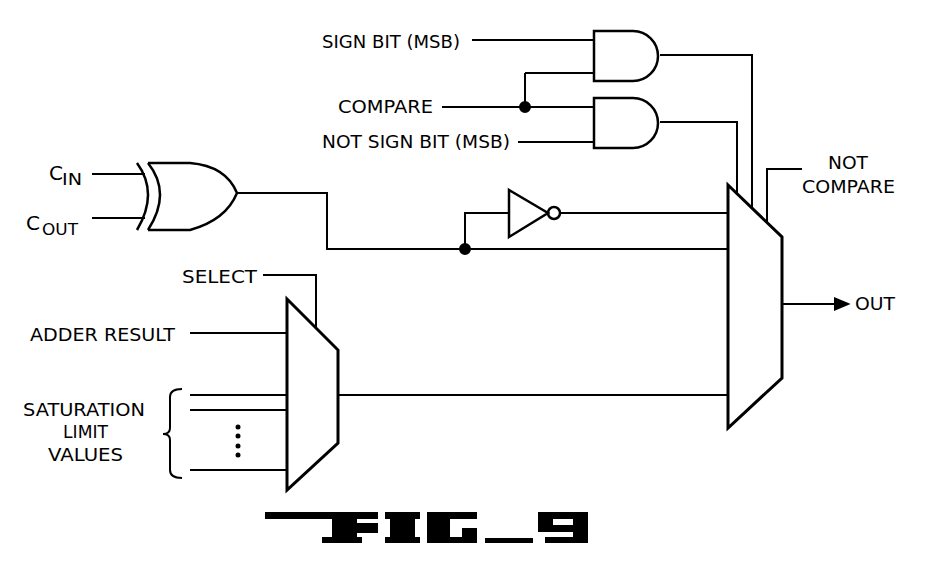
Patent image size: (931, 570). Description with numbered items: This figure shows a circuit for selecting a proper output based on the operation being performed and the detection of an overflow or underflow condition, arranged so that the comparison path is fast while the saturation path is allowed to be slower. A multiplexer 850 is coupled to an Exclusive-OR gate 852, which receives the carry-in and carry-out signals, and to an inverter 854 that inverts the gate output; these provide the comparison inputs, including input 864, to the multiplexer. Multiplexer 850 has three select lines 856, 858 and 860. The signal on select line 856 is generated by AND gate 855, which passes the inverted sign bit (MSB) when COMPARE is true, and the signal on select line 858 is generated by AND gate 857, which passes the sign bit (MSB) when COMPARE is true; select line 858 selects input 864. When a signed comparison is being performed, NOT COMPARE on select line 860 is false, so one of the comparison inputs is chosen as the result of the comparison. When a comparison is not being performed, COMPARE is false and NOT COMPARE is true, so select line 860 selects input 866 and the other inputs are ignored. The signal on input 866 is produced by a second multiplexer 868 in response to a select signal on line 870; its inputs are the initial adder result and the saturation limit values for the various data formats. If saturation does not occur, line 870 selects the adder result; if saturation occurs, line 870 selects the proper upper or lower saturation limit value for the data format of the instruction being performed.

The multiplexer 850 is at (788, 306).
The Exclusive-OR gate 852 is at (187, 196).
The inverter 854 is at (505, 198).
The AND gate 855 is at (626, 123).
The select line 856 is at (737, 153).
The AND gate 857 is at (626, 56).
The select line 858 is at (758, 90).
The select line 860 is at (767, 198).
The input 864 is at (615, 210).
The input 866 is at (639, 393).
The multiplexer 868 is at (312, 394).
The select line 870 is at (317, 299).